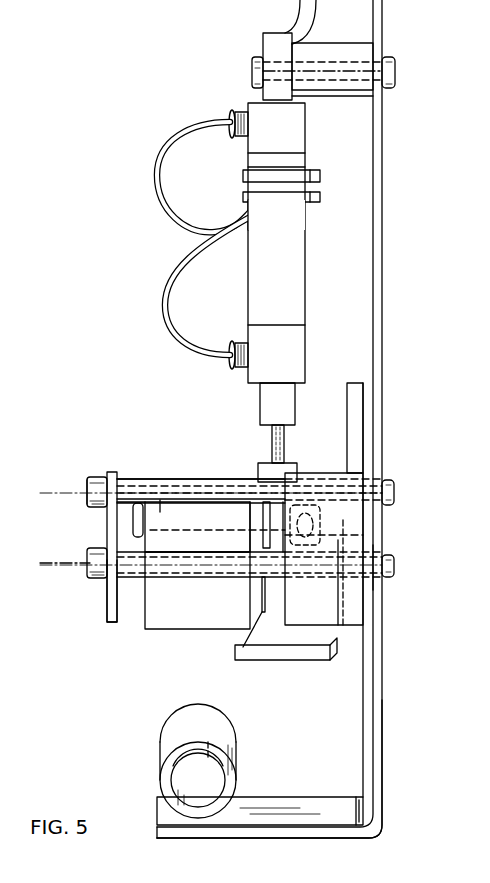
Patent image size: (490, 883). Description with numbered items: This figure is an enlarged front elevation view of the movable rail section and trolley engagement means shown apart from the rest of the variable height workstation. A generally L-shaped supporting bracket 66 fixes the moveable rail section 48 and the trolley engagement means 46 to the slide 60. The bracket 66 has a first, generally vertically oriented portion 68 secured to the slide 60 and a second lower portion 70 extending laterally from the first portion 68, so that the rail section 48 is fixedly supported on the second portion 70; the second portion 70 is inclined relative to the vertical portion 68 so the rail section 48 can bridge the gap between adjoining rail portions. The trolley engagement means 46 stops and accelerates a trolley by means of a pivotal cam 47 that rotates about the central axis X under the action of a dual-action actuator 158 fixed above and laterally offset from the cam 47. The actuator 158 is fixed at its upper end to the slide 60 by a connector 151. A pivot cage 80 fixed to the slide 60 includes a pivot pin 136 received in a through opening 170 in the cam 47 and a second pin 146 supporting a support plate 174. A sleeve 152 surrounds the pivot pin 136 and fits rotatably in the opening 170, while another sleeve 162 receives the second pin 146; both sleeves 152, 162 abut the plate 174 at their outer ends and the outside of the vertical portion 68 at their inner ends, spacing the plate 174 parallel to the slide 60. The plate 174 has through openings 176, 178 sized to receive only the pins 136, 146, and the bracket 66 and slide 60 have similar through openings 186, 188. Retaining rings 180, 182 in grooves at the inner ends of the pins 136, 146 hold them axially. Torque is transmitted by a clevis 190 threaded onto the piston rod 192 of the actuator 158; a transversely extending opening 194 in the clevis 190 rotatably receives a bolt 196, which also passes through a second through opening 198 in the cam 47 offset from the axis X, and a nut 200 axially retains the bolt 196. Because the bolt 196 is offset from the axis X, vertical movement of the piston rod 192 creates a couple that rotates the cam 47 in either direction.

The trolley engagement means 46 is at (236, 429).
The pivotal cam 47 is at (130, 622).
The moveable rail section 48 is at (163, 752).
The slide 60 is at (383, 258).
The L-shaped supporting bracket 66 is at (328, 775).
The first vertically oriented portion 68 is at (363, 688).
The second lower portion 70 is at (290, 810).
The pivot cage 80 is at (141, 474).
The pivot pin 136 is at (89, 575).
The second pin 146 is at (89, 498).
The connector 151 is at (396, 72).
The sleeve 152 is at (128, 572).
The dual-action actuator 158 is at (297, 257).
The sleeve 162 is at (229, 480).
The through opening 170 is at (185, 572).
The support plate 174 is at (107, 538).
The through opening 176 is at (103, 481).
The through opening 178 is at (183, 528).
The retaining ring 180 is at (389, 497).
The retaining ring 182 is at (395, 565).
The through opening 186 is at (387, 580).
The through opening 188 is at (378, 482).
The clevis 190 is at (293, 463).
The piston rod 192 is at (284, 438).
The transversely extending opening 194 is at (217, 528).
The bolt 196 is at (318, 528).
The second through opening 198 is at (164, 511).
The nut 200 is at (350, 534).
The central axis X is at (50, 566).